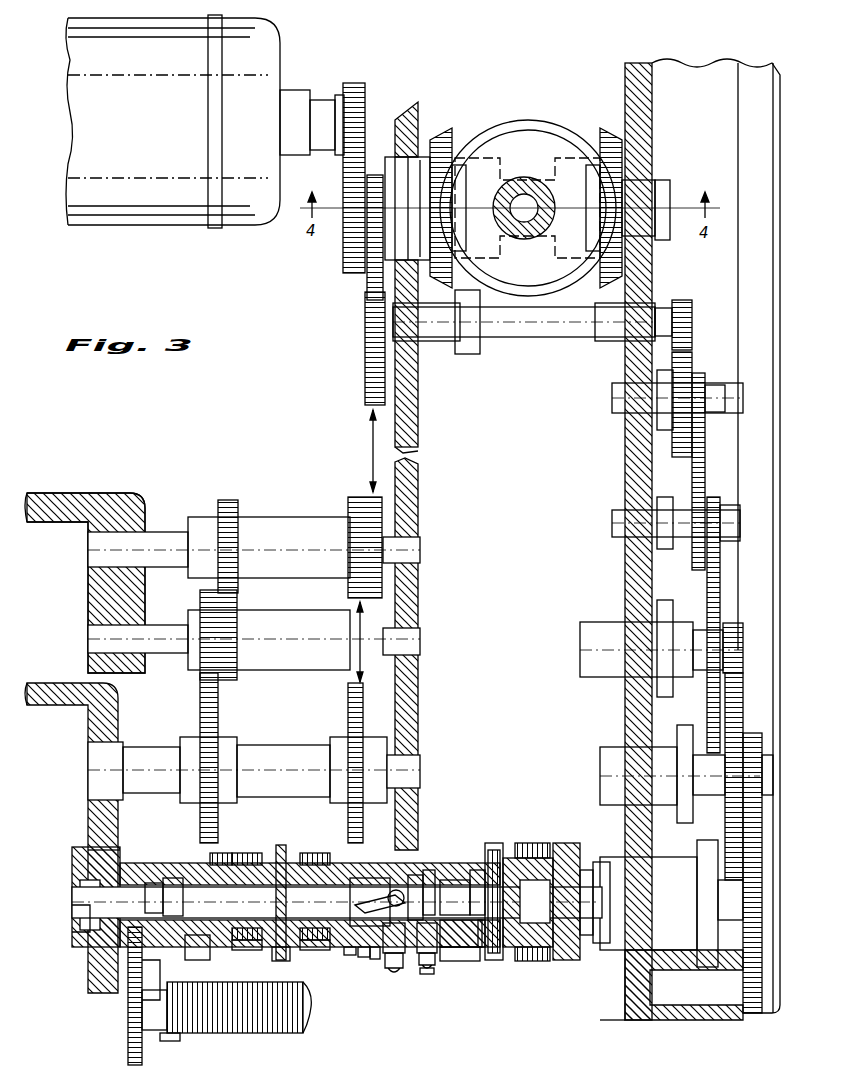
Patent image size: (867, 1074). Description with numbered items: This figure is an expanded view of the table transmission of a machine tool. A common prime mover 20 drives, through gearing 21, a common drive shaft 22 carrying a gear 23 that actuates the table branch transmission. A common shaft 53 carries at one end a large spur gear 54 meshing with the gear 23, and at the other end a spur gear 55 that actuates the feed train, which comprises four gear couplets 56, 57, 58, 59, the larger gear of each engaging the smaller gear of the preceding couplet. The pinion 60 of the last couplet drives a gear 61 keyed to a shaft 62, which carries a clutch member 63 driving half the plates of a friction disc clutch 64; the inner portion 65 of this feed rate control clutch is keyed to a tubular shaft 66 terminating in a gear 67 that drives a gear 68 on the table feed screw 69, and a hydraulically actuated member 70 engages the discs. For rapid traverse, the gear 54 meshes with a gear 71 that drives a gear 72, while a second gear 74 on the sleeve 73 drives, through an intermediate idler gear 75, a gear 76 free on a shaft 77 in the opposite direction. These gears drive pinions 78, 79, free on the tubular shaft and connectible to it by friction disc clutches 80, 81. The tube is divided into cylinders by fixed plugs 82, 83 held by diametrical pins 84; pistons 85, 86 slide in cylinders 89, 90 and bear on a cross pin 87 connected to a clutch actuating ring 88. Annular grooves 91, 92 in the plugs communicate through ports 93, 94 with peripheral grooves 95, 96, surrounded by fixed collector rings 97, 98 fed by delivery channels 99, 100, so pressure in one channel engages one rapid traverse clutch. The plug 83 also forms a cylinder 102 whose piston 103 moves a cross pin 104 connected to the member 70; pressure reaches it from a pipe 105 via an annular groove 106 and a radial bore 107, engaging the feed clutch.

The prime mover 20 is at (270, 48).
The gearing 21 is at (343, 166).
The common drive shaft 22 is at (670, 185).
The gear 23 is at (383, 174).
The common shaft 53 is at (520, 322).
The large spur gear 54 is at (365, 380).
The spur gear 55 is at (680, 300).
The gear couplet 56 is at (692, 380).
The gear couplet 57 is at (717, 500).
The gear couplet 58 is at (728, 622).
The gear couplet 59 is at (742, 735).
The pinion 60 is at (760, 740).
The gear 61 is at (756, 1013).
The shaft 62 is at (600, 863).
The clutch member 63 is at (576, 858).
The friction disc clutch 64 is at (522, 857).
The inner portion of clutch 65 is at (496, 850).
The tubular shaft 66 is at (74, 874).
The gear 67 is at (88, 843).
The gear 68 is at (128, 1037).
The table feed screw 69 is at (210, 1032).
The hydraulically actuated member 70 is at (480, 947).
The gear 71 is at (348, 492).
The gear 72 is at (348, 692).
The sleeve 73 is at (291, 520).
The second gear 74 is at (226, 500).
The intermediate idler gear 75 is at (234, 686).
The gear 76 is at (200, 712).
The shaft 77 is at (266, 746).
The pinion 78 is at (352, 955).
The pinion 79 is at (213, 940).
The friction disc clutch 80 is at (322, 950).
The friction disc clutch 81 is at (250, 950).
The fixed plug 82 is at (178, 884).
The fixed plug 83 is at (375, 878).
The diametrical pins 84 is at (395, 870).
The piston 85 is at (250, 856).
The piston 86 is at (330, 853).
The diametrical cross pin 87 is at (282, 845).
The clutch actuating ring 88 is at (284, 958).
The cylinder 89 is at (221, 852).
The cylinder 90 is at (364, 957).
The annular groove 91 is at (148, 873).
The annular groove 92 is at (418, 875).
The port 93 is at (72, 913).
The port 94 is at (386, 968).
The annular groove 95 is at (168, 870).
The annular groove 96 is at (396, 890).
The fixed collector ring 97 is at (164, 1042).
The fixed collector ring 98 is at (375, 959).
The delivery channel 99 is at (134, 1016).
The delivery channel 100 is at (422, 966).
The cylinder 102 is at (480, 870).
The piston 103 is at (458, 954).
The cross pin 104 is at (481, 856).
The pipe 105 is at (428, 974).
The annular groove 106 is at (430, 870).
The radial bore 107 is at (436, 955).